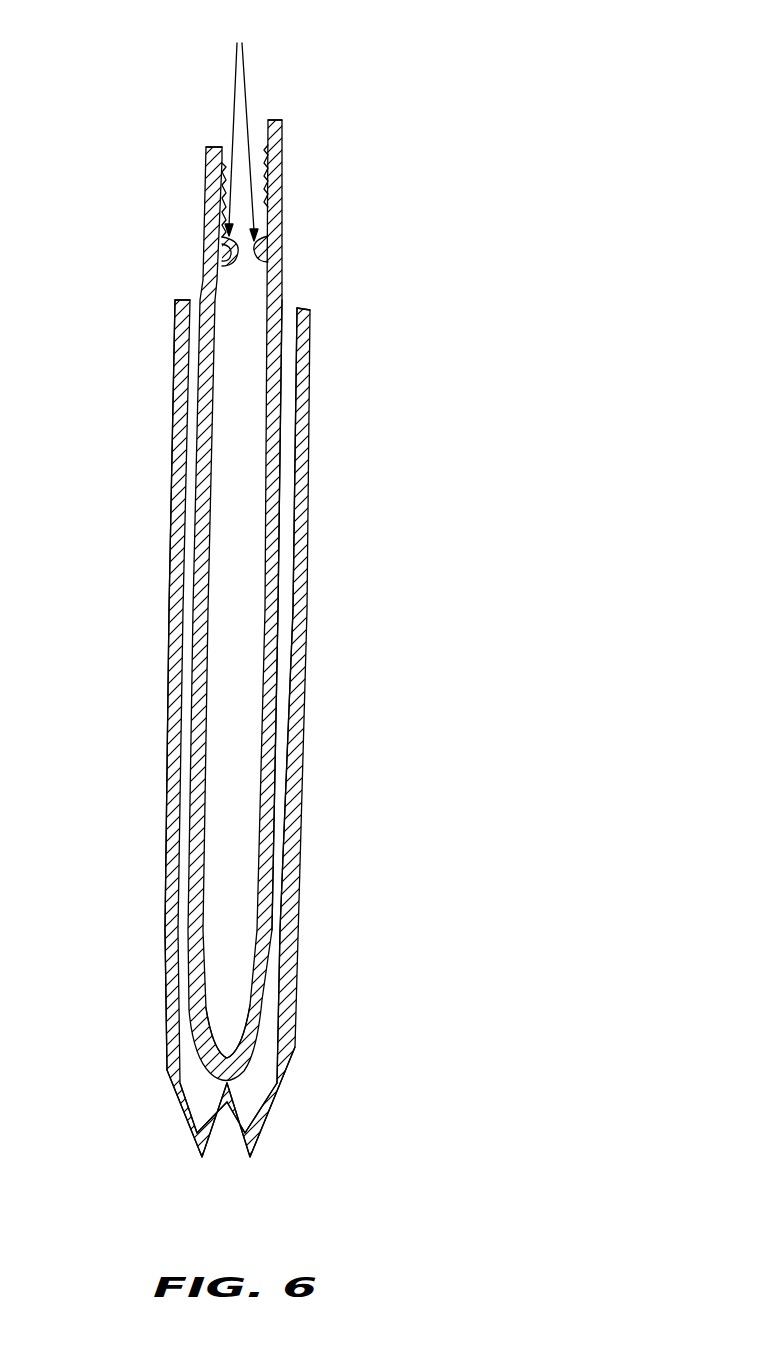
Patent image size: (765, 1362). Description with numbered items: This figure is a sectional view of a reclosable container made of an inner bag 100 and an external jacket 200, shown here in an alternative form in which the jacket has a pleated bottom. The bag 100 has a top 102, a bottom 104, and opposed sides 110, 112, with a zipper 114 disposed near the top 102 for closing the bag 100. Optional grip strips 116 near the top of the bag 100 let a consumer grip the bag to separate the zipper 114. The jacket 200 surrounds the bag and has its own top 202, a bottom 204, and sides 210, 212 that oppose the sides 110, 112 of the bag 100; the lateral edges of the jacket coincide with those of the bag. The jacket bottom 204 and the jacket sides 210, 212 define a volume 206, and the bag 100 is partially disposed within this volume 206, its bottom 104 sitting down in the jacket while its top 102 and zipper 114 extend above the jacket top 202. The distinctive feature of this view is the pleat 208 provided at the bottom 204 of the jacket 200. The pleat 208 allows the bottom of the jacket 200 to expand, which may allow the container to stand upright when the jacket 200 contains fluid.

The bag 100 is at (260, 767).
The top 102 is at (207, 143).
The bottom 104 is at (240, 1065).
The side 110 is at (282, 280).
The side 112 is at (203, 280).
The zipper 114 is at (243, 127).
The grip strips 116 is at (222, 160).
The jacket 200 is at (308, 502).
The top 202 is at (180, 298).
The bottom 204 is at (216, 1160).
The volume 206 is at (282, 637).
The pleat 208 is at (273, 1137).
The side 210 is at (297, 585).
The side 212 is at (173, 472).